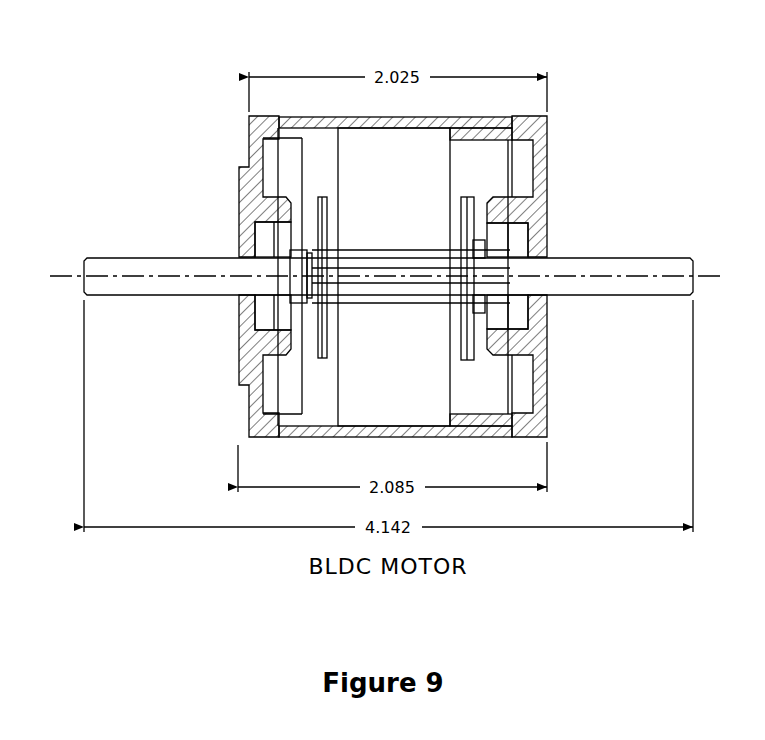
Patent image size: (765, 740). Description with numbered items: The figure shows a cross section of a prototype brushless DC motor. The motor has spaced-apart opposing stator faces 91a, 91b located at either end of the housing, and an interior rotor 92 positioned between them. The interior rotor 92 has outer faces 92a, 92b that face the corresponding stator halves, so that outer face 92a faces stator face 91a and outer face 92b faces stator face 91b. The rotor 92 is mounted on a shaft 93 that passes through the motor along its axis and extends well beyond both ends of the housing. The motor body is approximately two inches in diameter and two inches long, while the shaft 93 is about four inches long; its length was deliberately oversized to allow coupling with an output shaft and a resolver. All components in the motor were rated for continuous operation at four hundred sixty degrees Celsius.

The interior rotor 92 is at (387, 172).
The outer face of rotor 92a is at (327, 342).
The outer face of rotor 92b is at (455, 333).
The stator face 91a is at (237, 208).
The stator face 91b is at (549, 210).
The shaft 93 is at (107, 257).